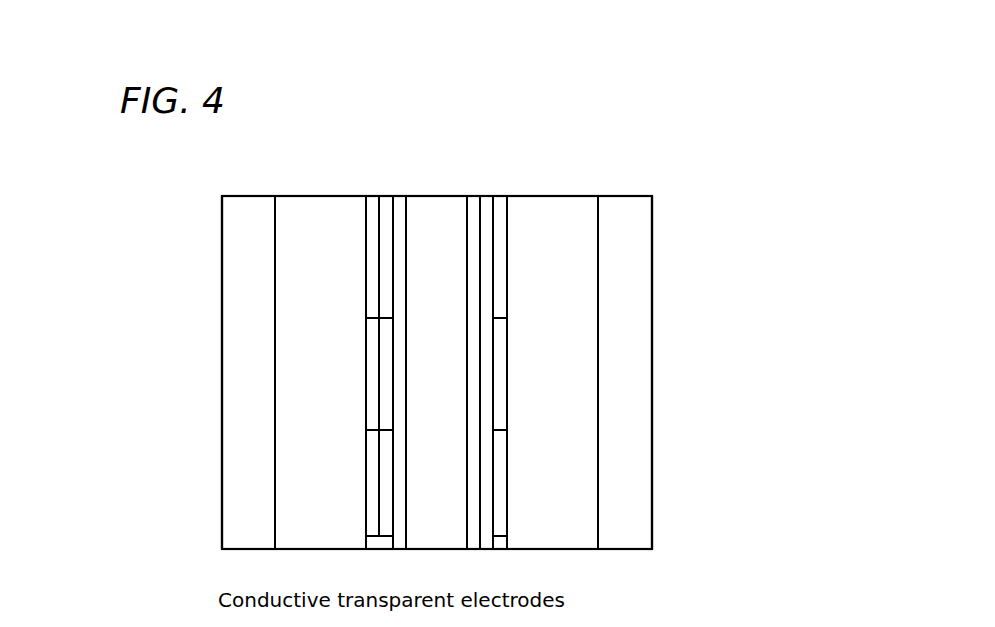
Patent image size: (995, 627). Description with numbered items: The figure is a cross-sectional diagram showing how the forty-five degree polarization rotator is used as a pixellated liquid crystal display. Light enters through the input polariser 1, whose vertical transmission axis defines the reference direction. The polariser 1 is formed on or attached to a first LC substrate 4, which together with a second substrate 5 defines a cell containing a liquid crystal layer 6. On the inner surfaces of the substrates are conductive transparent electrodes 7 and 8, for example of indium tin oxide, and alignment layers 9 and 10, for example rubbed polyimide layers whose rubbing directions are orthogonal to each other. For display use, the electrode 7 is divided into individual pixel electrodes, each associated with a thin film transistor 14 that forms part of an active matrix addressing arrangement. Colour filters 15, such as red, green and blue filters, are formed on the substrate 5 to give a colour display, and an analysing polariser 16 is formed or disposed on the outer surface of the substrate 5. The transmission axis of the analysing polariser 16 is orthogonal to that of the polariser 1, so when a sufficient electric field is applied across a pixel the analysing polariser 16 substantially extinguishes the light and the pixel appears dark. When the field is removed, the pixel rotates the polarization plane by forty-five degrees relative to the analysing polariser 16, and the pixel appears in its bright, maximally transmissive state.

The input polariser 1 is at (245, 240).
The first liquid crystal substrate 4 is at (305, 348).
The thin film transistor 14 is at (372, 497).
The conductive transparent electrode 7 is at (427, 587).
The alignment layer 9 is at (412, 192).
The liquid crystal layer 6 is at (405, 430).
The alignment layer 10 is at (452, 123).
The conductive transparent electrode 8 is at (427, 587).
The colour filters 15 is at (498, 267).
The second substrate 5 is at (555, 448).
The analysing polariser 16 is at (625, 305).